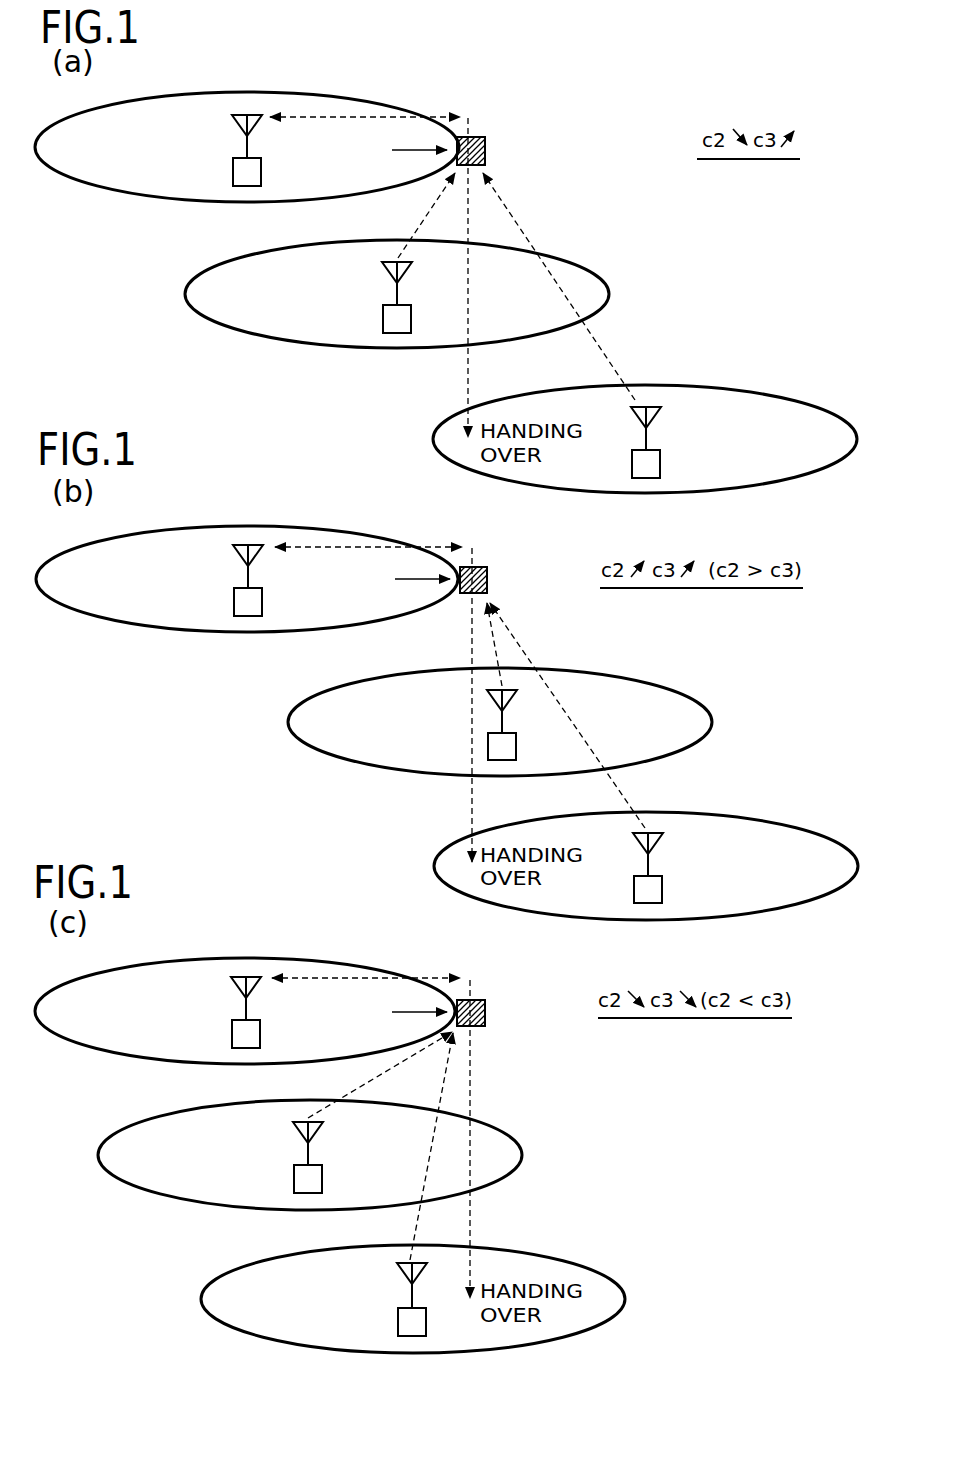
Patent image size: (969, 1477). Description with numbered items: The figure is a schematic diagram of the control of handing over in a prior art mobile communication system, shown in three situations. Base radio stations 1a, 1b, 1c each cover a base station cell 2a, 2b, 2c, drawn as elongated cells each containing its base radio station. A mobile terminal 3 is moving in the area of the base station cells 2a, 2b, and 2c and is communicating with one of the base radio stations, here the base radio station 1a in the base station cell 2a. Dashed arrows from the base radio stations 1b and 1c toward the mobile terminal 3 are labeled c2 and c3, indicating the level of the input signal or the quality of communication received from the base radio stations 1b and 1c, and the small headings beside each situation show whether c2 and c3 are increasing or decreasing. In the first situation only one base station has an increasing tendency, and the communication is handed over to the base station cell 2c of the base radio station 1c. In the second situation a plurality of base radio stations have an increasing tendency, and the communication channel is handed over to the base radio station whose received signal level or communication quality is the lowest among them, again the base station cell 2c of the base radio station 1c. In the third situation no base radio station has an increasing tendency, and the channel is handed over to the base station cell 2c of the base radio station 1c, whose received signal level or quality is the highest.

The base radio station 1a is at (232, 171).
The base radio station 1b is at (382, 318).
The base radio station 1c is at (631, 463).
The base station cell 2a is at (98, 188).
The base station cell 2b is at (235, 330).
The base station cell 2c is at (827, 412).
The mobile terminal 3 is at (487, 152).
The received signal quality from base station 1b c2 is at (426, 219).
The received signal quality from base station 1c c3 is at (512, 213).